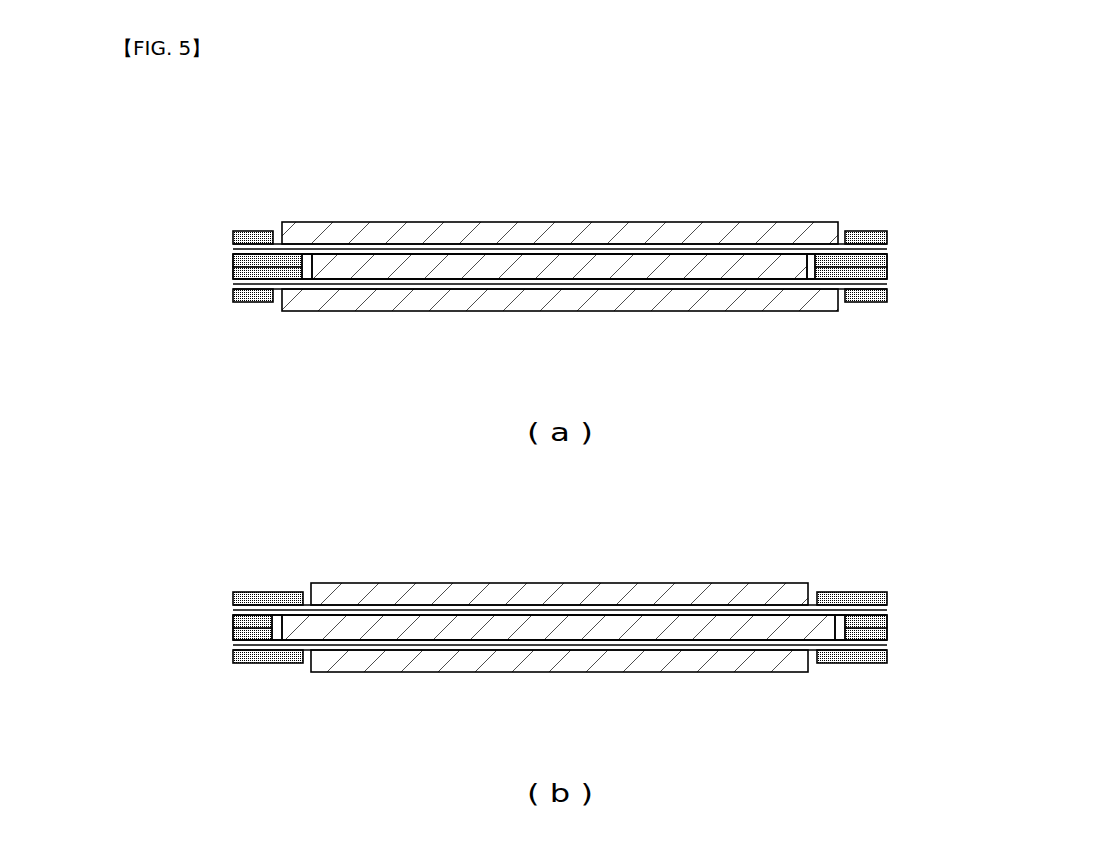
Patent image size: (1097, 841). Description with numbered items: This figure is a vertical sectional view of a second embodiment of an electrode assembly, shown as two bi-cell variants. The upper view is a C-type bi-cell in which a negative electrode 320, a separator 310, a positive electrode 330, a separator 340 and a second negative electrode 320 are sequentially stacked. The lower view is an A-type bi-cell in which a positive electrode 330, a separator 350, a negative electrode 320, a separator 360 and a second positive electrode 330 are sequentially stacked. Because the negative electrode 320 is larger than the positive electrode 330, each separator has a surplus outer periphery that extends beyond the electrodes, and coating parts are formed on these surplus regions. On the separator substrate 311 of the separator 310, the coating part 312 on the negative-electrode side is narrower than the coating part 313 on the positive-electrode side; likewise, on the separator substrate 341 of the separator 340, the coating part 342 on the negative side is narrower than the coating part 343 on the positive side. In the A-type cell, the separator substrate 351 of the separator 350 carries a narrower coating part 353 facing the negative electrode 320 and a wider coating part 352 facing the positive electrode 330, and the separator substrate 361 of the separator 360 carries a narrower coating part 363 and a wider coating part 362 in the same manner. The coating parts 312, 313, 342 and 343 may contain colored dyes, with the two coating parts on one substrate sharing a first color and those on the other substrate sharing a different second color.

The separator 310 is at (560, 211).
The separator substrate 311 is at (233, 249).
The coating part 312 is at (242, 231).
The coating part 313 is at (560, 247).
The negative electrode 320 is at (697, 222).
The positive electrode 330 is at (762, 263).
The separator 340 is at (560, 321).
The separator substrate 341 is at (233, 284).
The coating part 342 is at (242, 302).
The coating part 343 is at (233, 272).
The separator 350 is at (560, 572).
The separator substrate 351 is at (233, 610).
The coating part 352 is at (242, 592).
The coating part 353 is at (560, 608).
The separator 360 is at (560, 682).
The separator substrate 361 is at (233, 645).
The coating part 362 is at (242, 663).
The coating part 363 is at (233, 633).